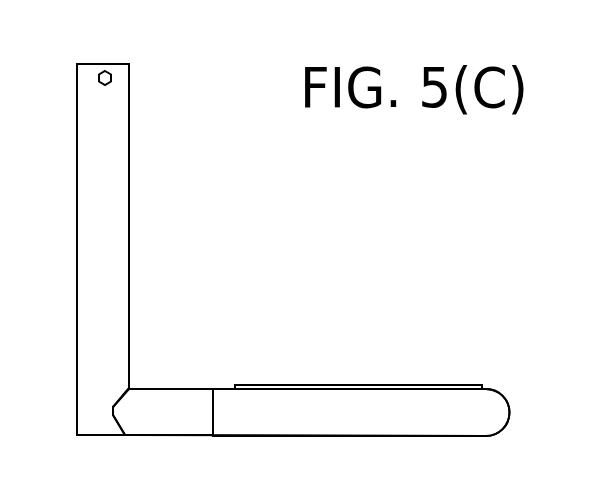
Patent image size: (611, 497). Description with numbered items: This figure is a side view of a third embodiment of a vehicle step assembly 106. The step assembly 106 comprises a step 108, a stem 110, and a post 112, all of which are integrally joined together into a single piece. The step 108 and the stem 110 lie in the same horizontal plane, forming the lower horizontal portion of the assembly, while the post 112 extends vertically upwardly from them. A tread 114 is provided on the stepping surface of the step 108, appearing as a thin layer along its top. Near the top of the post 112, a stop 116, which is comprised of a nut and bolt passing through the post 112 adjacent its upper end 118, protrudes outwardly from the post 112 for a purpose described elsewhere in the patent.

The step assembly 106 is at (302, 260).
The step 108 is at (265, 405).
The stem 110 is at (158, 398).
The post 112 is at (98, 212).
The tread 114 is at (370, 385).
The stop 116 is at (110, 84).
The upper end 118 is at (102, 64).